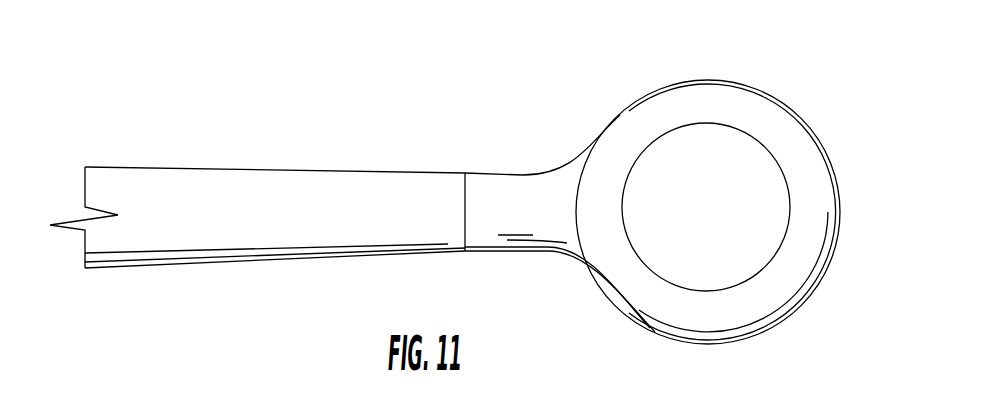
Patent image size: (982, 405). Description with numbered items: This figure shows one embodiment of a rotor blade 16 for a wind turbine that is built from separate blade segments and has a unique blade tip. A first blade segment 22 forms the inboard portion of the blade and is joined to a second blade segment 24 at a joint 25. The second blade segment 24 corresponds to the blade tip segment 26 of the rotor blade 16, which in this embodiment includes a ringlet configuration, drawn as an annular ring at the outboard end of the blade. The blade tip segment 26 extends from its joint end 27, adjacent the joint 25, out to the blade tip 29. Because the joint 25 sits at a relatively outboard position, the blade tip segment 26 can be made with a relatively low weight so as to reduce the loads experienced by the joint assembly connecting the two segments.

The rotor blade 16 is at (279, 63).
The first blade segment 22 is at (295, 166).
The second blade segment 24 is at (727, 82).
The joint 25 is at (462, 215).
The blade tip segment 26 is at (657, 117).
The joint end 27 is at (495, 187).
The blade tip 29 is at (812, 172).